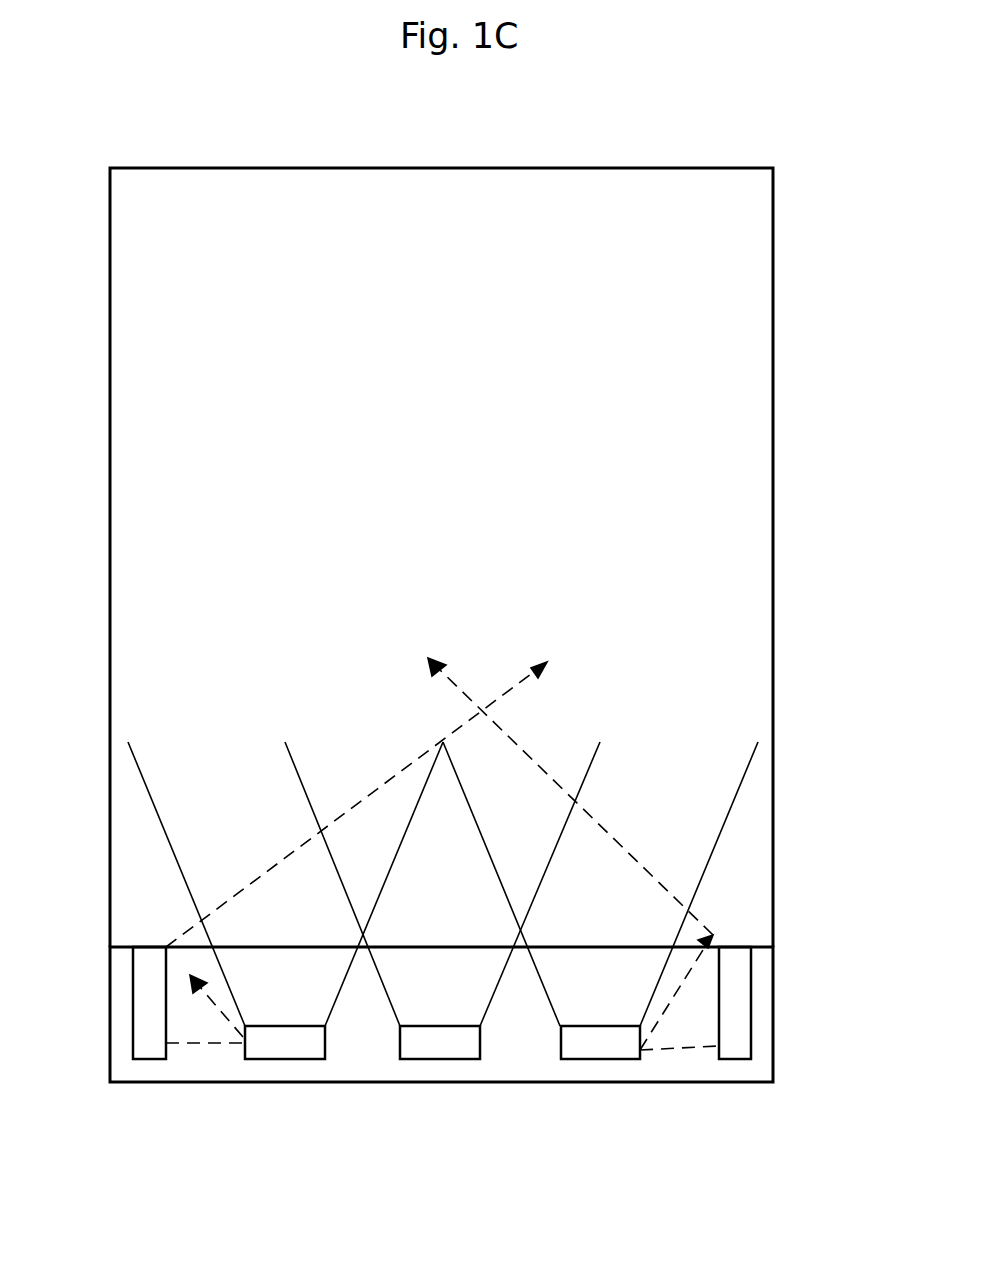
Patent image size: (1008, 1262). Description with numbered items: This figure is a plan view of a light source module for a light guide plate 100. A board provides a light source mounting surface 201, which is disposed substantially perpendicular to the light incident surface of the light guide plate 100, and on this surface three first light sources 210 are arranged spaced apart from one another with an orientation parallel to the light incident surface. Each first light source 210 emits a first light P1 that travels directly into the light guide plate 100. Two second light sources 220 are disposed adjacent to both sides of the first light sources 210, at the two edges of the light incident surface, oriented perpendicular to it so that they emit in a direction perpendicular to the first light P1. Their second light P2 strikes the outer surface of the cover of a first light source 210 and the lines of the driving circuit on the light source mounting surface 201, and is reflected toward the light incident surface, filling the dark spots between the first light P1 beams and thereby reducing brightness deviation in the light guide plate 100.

The light guide plate 100 is at (753, 291).
The light source mounting surface 201 is at (768, 1000).
The first light sources 210 is at (285, 1060).
The second light sources 220 is at (150, 1060).
The first light P1 is at (145, 792).
The second light P2 is at (417, 760).